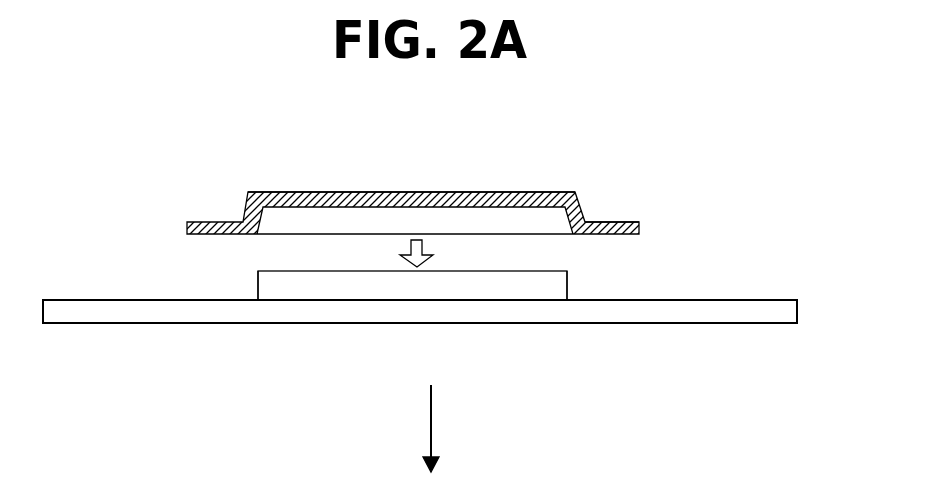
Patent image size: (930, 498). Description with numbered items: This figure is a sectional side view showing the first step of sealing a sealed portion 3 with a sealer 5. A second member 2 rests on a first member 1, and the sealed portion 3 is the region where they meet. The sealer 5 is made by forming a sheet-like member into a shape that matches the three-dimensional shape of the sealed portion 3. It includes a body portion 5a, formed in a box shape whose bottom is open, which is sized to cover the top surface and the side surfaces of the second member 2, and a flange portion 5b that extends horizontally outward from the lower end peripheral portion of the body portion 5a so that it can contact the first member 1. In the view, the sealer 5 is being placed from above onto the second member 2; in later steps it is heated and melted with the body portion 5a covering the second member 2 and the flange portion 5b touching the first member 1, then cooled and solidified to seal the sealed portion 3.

The first member 1 is at (80, 300).
The second member 2 is at (367, 271).
The sealed portion 3 is at (258, 300).
The sealer 5 is at (430, 165).
The body portion 5a is at (471, 192).
The flange portion 5b is at (617, 222).